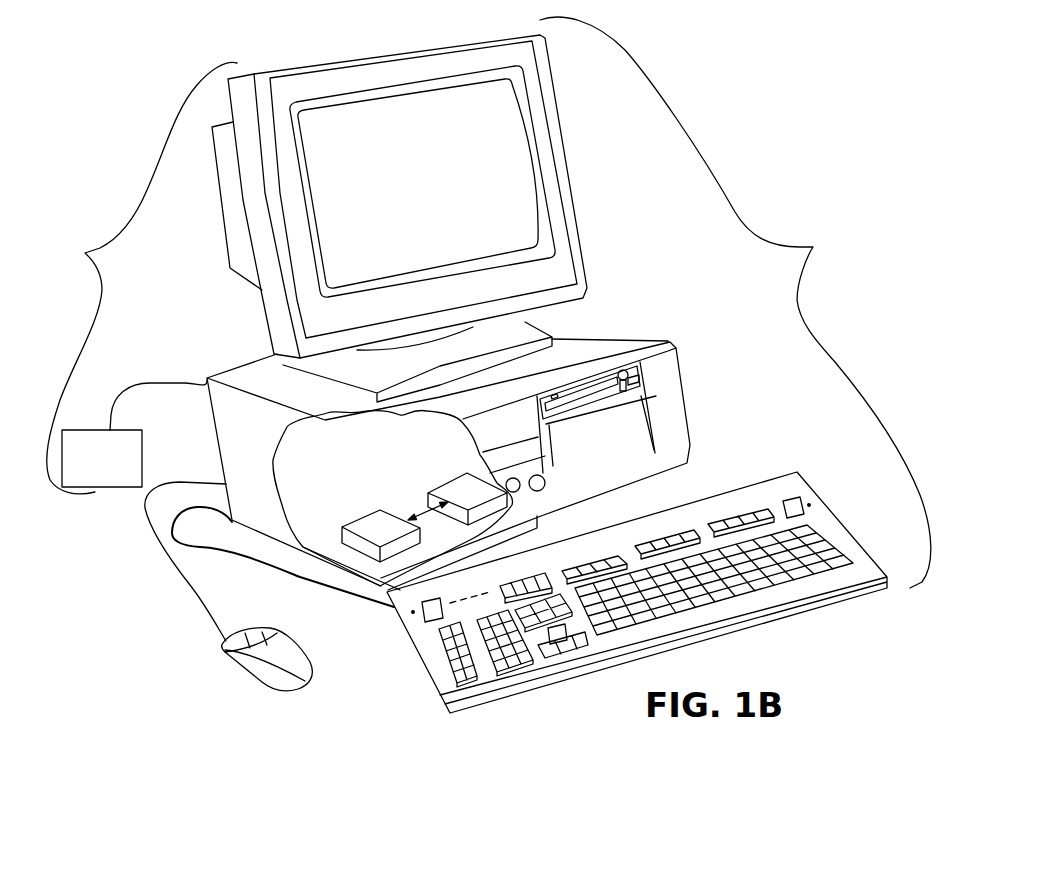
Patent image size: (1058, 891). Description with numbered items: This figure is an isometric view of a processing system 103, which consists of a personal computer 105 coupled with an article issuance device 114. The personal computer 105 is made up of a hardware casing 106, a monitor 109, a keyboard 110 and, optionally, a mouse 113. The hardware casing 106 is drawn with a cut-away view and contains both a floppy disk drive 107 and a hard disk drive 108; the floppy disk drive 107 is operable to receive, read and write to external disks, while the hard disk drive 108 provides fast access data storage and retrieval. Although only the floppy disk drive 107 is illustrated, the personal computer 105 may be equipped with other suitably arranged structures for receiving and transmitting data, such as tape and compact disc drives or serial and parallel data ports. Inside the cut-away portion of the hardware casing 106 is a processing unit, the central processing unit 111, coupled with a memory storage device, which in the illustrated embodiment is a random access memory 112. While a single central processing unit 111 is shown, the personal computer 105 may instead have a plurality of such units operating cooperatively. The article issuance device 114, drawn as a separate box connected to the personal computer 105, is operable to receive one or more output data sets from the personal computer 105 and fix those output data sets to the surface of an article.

The processing system 103 is at (138, 277).
The personal computer 105 is at (735, 302).
The hardware casing 106 is at (660, 336).
The floppy disk drive 107 is at (645, 382).
The hard disk drive 108 is at (607, 415).
The monitor 109 is at (266, 306).
The keyboard 110 is at (802, 480).
The central processing unit 111 is at (443, 487).
The random access memory 112 is at (357, 523).
The mouse 113 is at (223, 647).
The article issuance device 114 is at (126, 474).